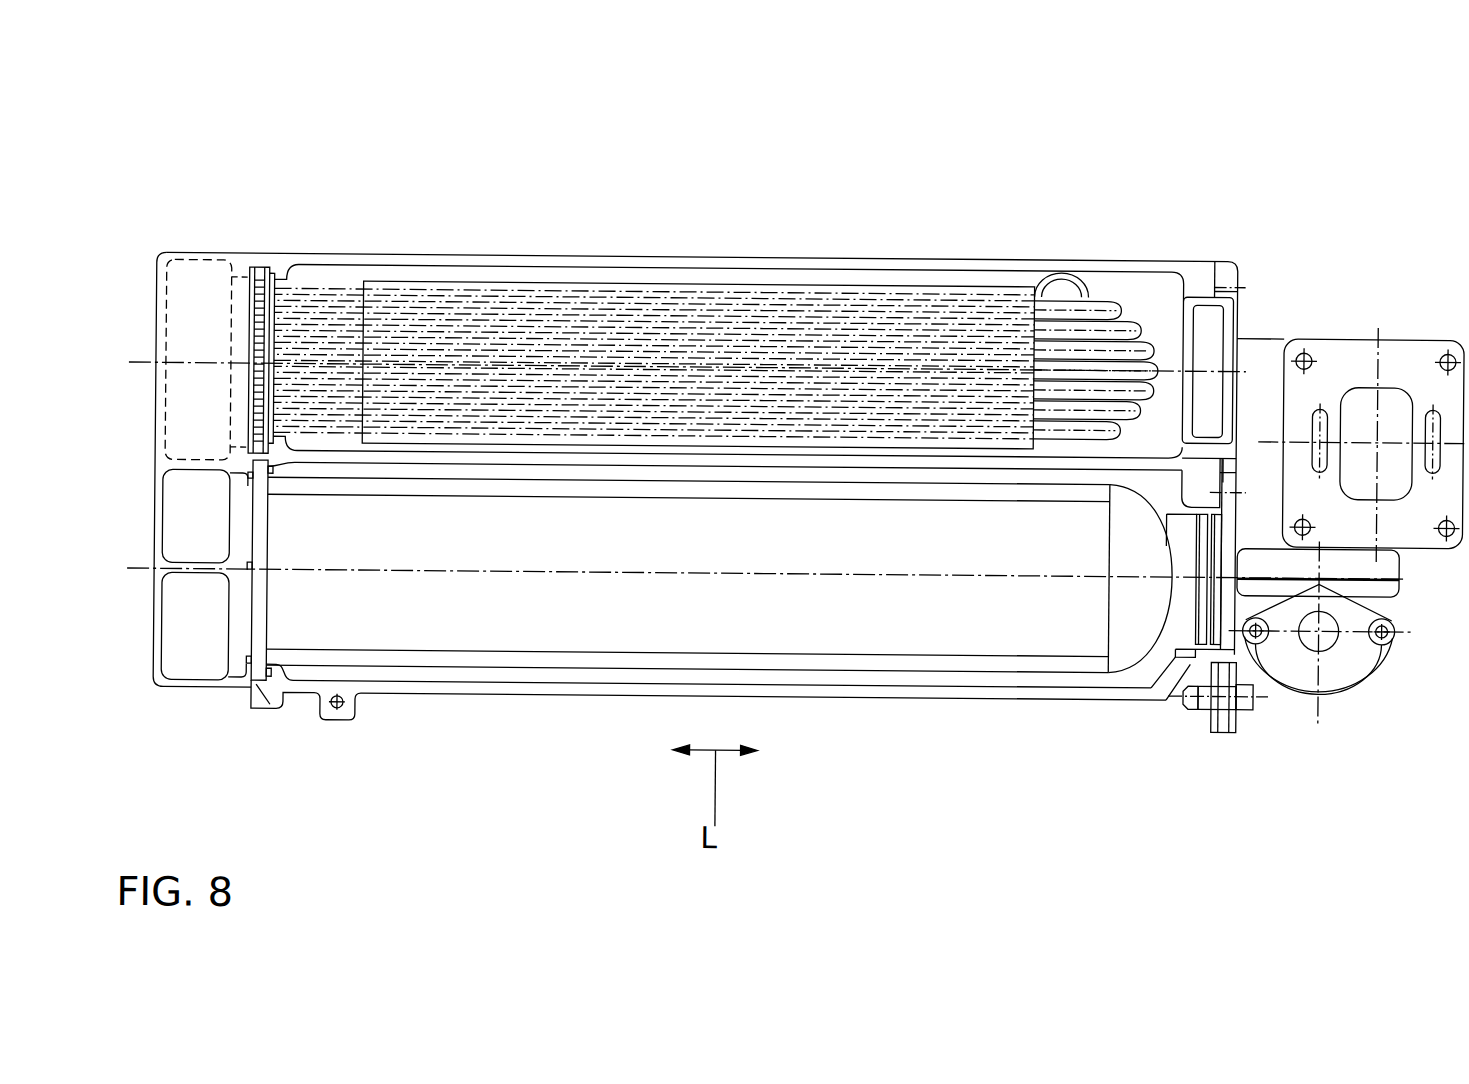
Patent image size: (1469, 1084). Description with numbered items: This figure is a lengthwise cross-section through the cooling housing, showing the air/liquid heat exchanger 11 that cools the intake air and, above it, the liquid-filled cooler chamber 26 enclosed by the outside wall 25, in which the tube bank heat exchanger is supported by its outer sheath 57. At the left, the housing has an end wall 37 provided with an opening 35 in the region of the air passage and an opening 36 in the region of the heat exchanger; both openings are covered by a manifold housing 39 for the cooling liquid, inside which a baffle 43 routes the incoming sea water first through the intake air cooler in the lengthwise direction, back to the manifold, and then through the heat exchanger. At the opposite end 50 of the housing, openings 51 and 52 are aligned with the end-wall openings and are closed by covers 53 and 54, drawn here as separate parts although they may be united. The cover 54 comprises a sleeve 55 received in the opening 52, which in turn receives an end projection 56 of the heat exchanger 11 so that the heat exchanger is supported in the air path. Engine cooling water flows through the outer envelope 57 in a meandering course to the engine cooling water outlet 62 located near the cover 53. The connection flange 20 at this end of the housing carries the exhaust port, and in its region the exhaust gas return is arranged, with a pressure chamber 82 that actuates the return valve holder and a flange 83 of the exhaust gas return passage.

The air/liquid heat exchanger 11 is at (543, 626).
The connection flange 20 is at (1332, 347).
The outside wall 25 is at (712, 257).
The cooler chamber 26 is at (588, 274).
The opening 35 is at (258, 686).
The opening 36 is at (258, 270).
The end wall 37 is at (279, 259).
The manifold housing 39 is at (243, 681).
The baffle 43 is at (188, 572).
The opposite end 50 is at (1246, 308).
The opening 51 is at (1190, 292).
The opening 52 is at (1207, 648).
The cover 53 is at (1234, 264).
The cover 54 is at (1256, 703).
The sleeve 55 is at (1227, 648).
The end projection 56 is at (1176, 630).
The outer sheath 57 is at (848, 294).
The engine cooling water outlet 62 is at (1060, 282).
The pressure chamber 82 is at (1340, 690).
The flange 83 is at (1231, 722).